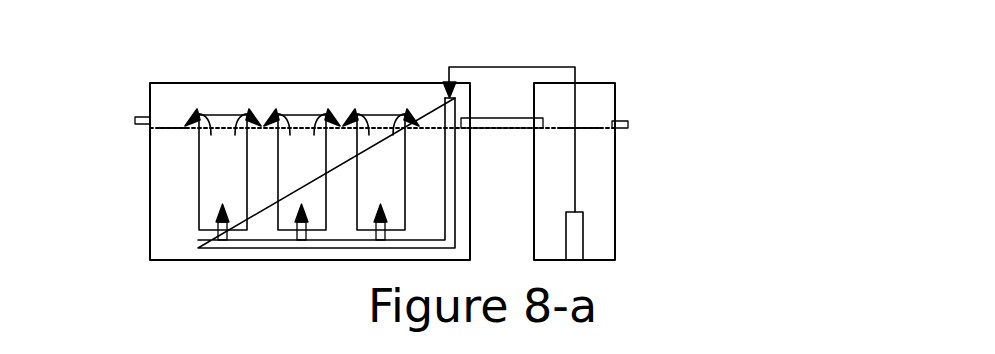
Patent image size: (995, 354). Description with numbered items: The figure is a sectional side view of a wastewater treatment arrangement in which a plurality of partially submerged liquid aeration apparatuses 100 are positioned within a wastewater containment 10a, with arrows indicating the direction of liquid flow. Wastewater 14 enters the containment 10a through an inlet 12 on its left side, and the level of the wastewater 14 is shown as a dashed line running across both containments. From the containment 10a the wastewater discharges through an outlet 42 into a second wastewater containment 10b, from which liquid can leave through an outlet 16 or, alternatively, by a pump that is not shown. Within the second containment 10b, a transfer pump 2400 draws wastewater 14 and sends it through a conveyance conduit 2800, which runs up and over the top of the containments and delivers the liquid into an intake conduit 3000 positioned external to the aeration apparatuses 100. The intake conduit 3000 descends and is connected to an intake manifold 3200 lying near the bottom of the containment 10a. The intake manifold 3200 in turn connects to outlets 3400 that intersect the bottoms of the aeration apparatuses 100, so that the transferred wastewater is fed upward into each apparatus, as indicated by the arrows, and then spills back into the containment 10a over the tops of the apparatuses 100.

The wastewater containment 10a is at (150, 218).
The wastewater containment 10b is at (615, 177).
The inlet 12 is at (135, 120).
The wastewater 14 is at (167, 128).
The outlet 16 is at (628, 123).
The outlet 42 is at (520, 130).
The liquid aeration apparatus 100 is at (302, 169).
The transfer pump 2400 is at (583, 237).
The conveyance conduit 2800 is at (525, 66).
The intake conduit 3000 is at (443, 105).
The intake manifold 3200 is at (340, 253).
The outlets 3400 is at (200, 240).